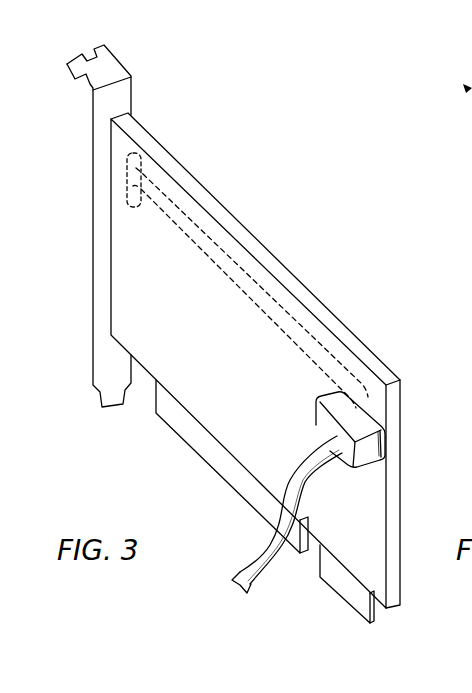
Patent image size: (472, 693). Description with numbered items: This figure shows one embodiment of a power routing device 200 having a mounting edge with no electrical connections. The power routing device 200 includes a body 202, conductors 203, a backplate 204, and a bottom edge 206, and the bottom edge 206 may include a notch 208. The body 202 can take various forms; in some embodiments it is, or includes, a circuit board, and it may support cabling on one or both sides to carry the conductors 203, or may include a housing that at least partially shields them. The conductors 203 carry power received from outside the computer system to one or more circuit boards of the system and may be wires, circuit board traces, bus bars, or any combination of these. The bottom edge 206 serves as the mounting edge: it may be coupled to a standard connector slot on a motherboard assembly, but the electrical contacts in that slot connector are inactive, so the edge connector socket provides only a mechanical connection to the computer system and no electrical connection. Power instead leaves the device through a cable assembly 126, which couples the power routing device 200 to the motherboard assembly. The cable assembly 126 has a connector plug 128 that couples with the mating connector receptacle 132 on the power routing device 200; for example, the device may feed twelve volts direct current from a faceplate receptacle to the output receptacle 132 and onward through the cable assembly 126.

The power routing device 200 is at (238, 163).
The body 202 is at (180, 269).
The conductors 203 is at (239, 292).
The backplate 204 is at (116, 403).
The bottom edge 206 is at (205, 458).
The notch 208 is at (314, 559).
The cable assembly 126 is at (252, 578).
The connector plug 128 is at (316, 413).
The mating connector receptacle 132 is at (384, 451).